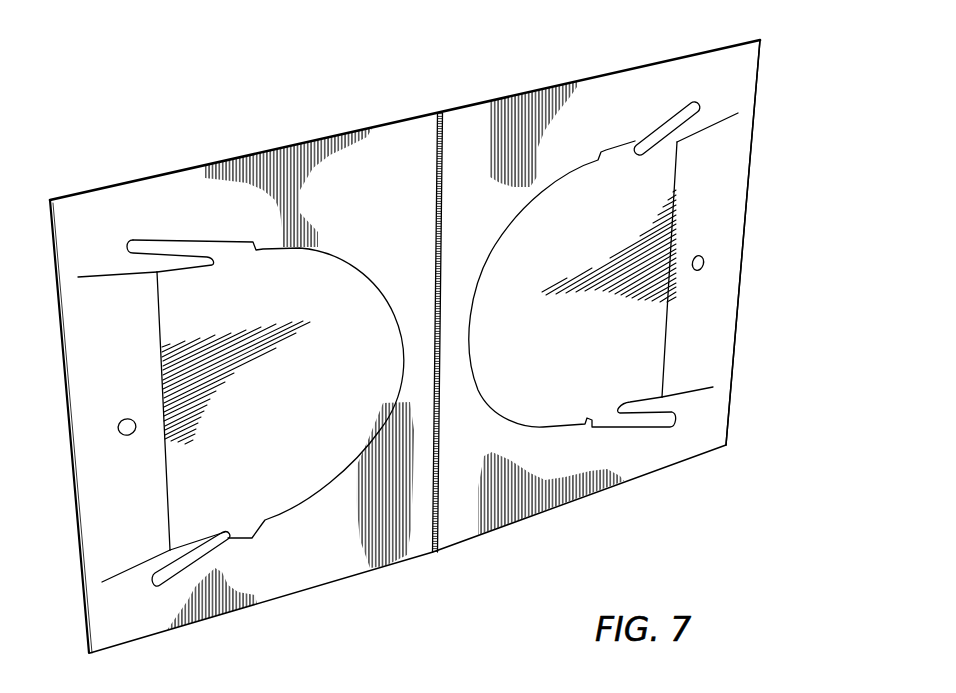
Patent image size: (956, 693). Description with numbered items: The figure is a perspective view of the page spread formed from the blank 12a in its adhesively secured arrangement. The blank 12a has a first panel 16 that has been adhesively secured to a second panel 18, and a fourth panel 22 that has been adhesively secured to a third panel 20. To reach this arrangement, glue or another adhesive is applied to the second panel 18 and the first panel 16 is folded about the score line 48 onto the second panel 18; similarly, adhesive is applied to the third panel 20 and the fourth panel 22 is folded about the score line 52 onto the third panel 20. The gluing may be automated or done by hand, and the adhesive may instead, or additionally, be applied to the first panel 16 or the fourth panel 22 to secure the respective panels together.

The blank 12a is at (267, 103).
The score line 48 is at (88, 640).
The first panel 16 is at (250, 577).
The second panel 18 is at (255, 478).
The third panel 20 is at (542, 352).
The fourth panel 22 is at (600, 478).
The score line 52 is at (730, 407).